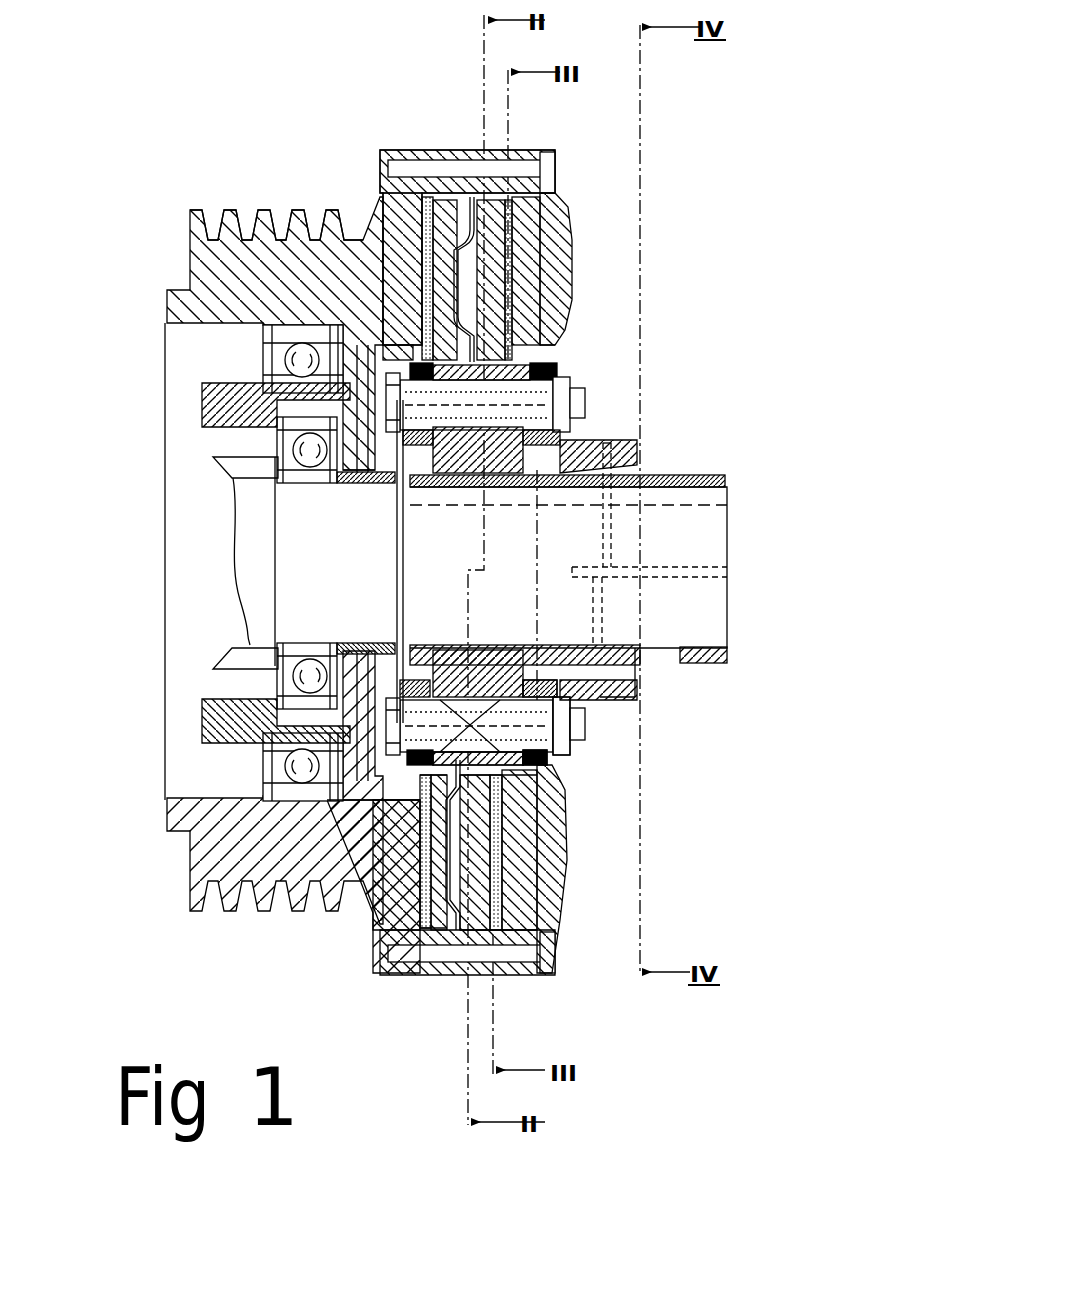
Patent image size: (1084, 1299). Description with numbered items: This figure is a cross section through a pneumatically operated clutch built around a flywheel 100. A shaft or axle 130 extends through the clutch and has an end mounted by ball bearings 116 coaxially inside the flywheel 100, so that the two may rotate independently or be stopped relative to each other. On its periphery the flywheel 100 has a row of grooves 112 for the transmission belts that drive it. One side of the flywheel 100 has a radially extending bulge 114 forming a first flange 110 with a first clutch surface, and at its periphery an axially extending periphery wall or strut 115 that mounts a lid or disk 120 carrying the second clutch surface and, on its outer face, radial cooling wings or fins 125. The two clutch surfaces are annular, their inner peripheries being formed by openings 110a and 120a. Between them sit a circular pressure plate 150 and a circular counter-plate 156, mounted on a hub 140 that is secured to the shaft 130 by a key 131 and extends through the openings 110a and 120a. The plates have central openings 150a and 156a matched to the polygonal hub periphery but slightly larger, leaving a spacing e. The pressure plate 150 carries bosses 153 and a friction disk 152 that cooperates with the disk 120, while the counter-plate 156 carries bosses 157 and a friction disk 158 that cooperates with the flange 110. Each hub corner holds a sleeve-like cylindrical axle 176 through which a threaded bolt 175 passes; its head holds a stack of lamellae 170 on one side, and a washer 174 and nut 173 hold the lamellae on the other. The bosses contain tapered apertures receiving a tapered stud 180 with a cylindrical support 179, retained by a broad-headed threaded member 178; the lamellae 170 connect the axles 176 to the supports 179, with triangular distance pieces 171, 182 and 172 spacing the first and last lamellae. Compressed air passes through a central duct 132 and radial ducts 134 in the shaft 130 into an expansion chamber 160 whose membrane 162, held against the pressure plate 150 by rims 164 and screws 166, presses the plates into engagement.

The flywheel 100 is at (323, 277).
The first flange 110 is at (380, 200).
The grooves 112 is at (250, 225).
The radially extending bulge 114 is at (407, 205).
The periphery wall or strut 115 is at (458, 152).
The ball bearings 116 is at (310, 677).
The lid or disk 120 is at (560, 192).
The radial cooling wings or fins 125 is at (572, 215).
The shaft or axle 130 is at (650, 593).
The key 131 is at (679, 485).
The central or axial duct 132 is at (683, 575).
The radial ducts 134 is at (605, 545).
The hub 140 is at (600, 623).
The pressure plate 150 is at (508, 228).
The central opening 150a is at (490, 697).
The friction disk 152 is at (525, 200).
The bosses 153 is at (515, 812).
The counter-plate 156 is at (445, 860).
The central opening 156a is at (450, 695).
The bosses 157 is at (400, 812).
The friction disk 158 is at (425, 830).
The expansion chamber 160 is at (492, 248).
The membrane 162 is at (462, 290).
The rims 164 is at (425, 285).
The screws 166 is at (470, 905).
The stack of lamellae 170 is at (553, 363).
The distance piece 171 is at (523, 350).
The distance piece 172 is at (583, 393).
The nut 173 is at (585, 400).
The washer 174 is at (585, 445).
The threaded bolt 175 is at (398, 396).
The cylindrical axle 176 is at (397, 500).
The threaded member 178 is at (535, 762).
The cylindrical support 179 is at (520, 778).
The tapered stud 180 is at (520, 770).
The distance piece 182 is at (520, 810).
The opening 110a is at (407, 357).
The opening 120a is at (530, 790).
The spacing e is at (540, 345).